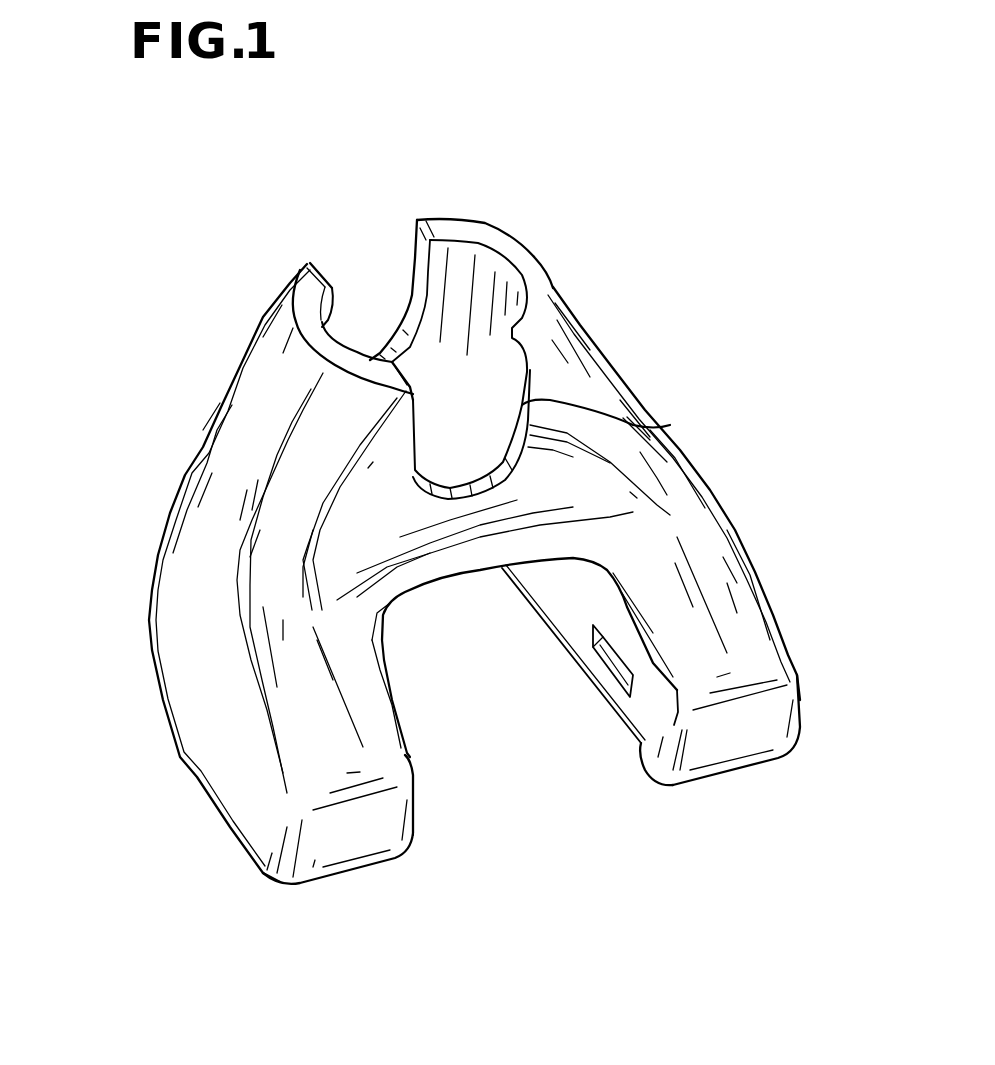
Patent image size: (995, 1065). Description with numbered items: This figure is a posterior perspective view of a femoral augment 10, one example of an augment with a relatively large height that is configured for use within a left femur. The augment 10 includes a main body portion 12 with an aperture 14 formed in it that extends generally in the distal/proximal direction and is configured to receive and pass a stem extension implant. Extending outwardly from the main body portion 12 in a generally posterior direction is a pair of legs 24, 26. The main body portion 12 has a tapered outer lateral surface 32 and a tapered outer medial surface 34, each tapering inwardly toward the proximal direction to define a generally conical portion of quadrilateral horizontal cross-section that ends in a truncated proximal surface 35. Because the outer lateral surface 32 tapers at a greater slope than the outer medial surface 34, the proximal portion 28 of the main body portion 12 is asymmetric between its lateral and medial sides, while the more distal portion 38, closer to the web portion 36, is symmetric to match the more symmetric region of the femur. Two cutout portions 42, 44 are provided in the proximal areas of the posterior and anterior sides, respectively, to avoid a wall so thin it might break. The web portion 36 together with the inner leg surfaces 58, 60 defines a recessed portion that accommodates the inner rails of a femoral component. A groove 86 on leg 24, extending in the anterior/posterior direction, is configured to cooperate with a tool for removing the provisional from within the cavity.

The femoral augment 10 is at (722, 338).
The main body portion 12 is at (210, 607).
The aperture 14 is at (475, 357).
The leg 24 is at (763, 665).
The leg 26 is at (313, 760).
The proximal portion 28 is at (330, 433).
The outer lateral surface 32 is at (243, 450).
The outer medial surface 34 is at (597, 362).
The truncated proximal surface 35 is at (450, 227).
The web portion 36 is at (452, 582).
The distal portion 38 is at (477, 558).
The cutout portion 42 is at (670, 427).
The cutout portion 44 is at (418, 277).
The inner leg surface 58 is at (653, 722).
The inner leg surface 60 is at (411, 762).
The groove 86 is at (618, 655).